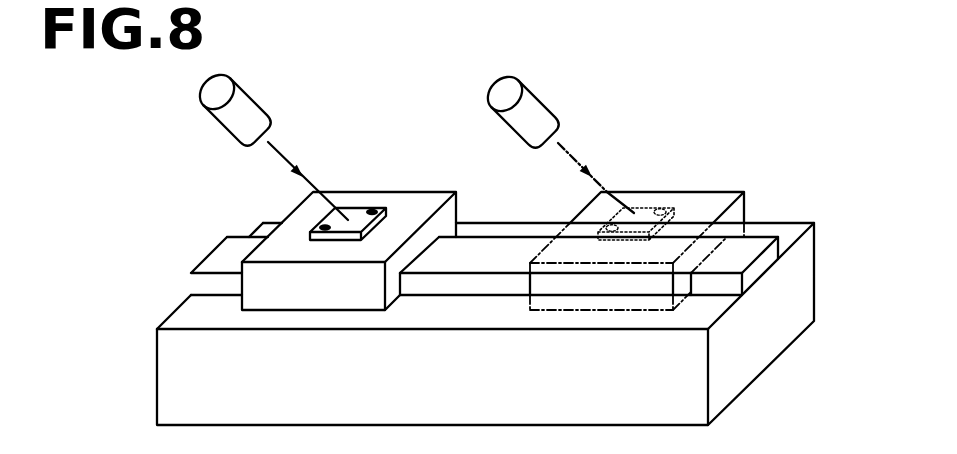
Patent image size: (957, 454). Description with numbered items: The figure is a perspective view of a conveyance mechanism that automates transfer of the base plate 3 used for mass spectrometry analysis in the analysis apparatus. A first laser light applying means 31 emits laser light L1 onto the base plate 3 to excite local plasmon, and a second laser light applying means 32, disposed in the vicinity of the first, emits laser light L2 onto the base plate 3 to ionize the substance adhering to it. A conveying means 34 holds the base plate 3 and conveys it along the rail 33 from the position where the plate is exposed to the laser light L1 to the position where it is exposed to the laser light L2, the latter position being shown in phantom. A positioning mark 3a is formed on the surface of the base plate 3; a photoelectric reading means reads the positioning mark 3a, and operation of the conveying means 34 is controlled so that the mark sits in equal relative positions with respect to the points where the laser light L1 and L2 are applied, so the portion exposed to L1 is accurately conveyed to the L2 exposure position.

The base plate 3 is at (350, 212).
The positioning mark 3a is at (390, 226).
The first laser light applying means 31 is at (253, 105).
The second laser light applying means 32 is at (542, 107).
The rail 33 is at (468, 285).
The conveying means 34 is at (311, 313).
The laser light L1 is at (290, 160).
The laser light L2 is at (580, 156).